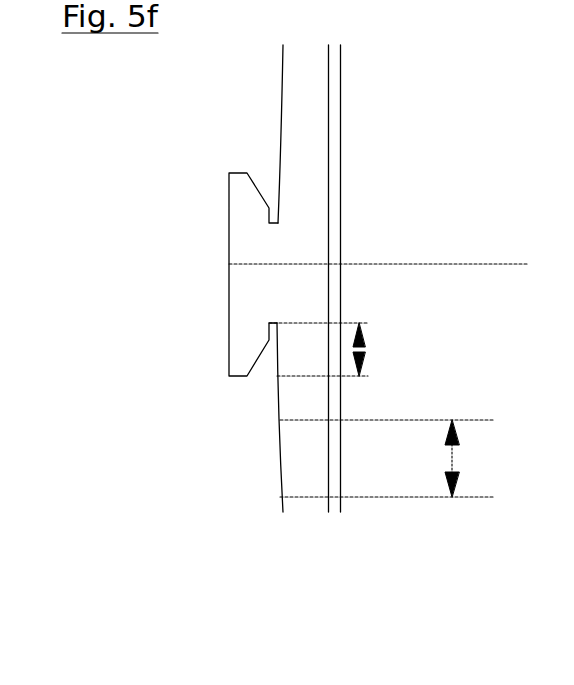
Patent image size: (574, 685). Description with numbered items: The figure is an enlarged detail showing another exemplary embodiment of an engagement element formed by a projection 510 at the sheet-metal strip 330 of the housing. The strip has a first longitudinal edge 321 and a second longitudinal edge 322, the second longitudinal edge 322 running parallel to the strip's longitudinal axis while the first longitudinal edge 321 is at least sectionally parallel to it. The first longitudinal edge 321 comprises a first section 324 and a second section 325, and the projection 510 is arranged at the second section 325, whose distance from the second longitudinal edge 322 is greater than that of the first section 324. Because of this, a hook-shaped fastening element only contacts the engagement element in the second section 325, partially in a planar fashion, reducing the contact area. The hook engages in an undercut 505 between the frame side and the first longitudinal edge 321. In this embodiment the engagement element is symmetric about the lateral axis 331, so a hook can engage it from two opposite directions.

The first longitudinal edge 321 is at (282, 73).
The second longitudinal edge 322 is at (341, 58).
The undercut 505 is at (268, 200).
The projection 510 is at (248, 311).
The lateral axis 331 is at (452, 264).
The second section 325 is at (354, 350).
The first section 324 is at (407, 458).
The sheet-metal strip 330 is at (312, 500).